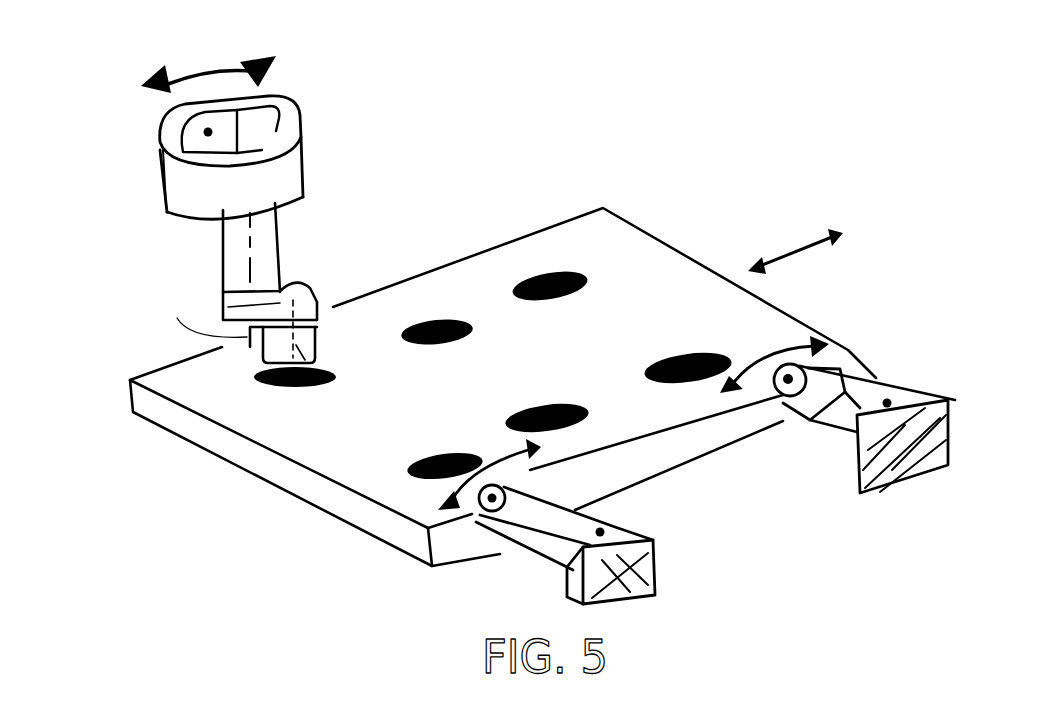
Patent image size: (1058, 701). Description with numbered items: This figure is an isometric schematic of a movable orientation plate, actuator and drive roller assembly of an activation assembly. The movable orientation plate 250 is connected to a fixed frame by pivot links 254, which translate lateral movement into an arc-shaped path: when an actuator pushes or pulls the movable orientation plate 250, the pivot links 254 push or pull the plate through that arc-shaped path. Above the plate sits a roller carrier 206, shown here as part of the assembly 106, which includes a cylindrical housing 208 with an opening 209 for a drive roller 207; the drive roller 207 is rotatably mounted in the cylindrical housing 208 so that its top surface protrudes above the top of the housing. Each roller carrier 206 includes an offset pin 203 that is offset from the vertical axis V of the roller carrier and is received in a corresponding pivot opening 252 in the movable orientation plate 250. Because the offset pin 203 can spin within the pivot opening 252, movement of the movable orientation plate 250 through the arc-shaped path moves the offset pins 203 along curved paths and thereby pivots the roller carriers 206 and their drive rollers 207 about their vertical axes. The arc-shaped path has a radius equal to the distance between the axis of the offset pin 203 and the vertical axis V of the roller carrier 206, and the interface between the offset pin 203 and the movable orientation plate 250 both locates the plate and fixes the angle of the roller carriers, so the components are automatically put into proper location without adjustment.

The tool assembly 106 is at (233, 195).
The offset pin 203 is at (320, 336).
The roller carrier 206 is at (150, 158).
The drive roller 207 is at (255, 122).
The cylindrical housing 208 is at (306, 157).
The opening 209 is at (284, 104).
The movable orientation plate 250 is at (270, 465).
The pivot opening 252 is at (255, 383).
The pivot link 254 is at (500, 556).